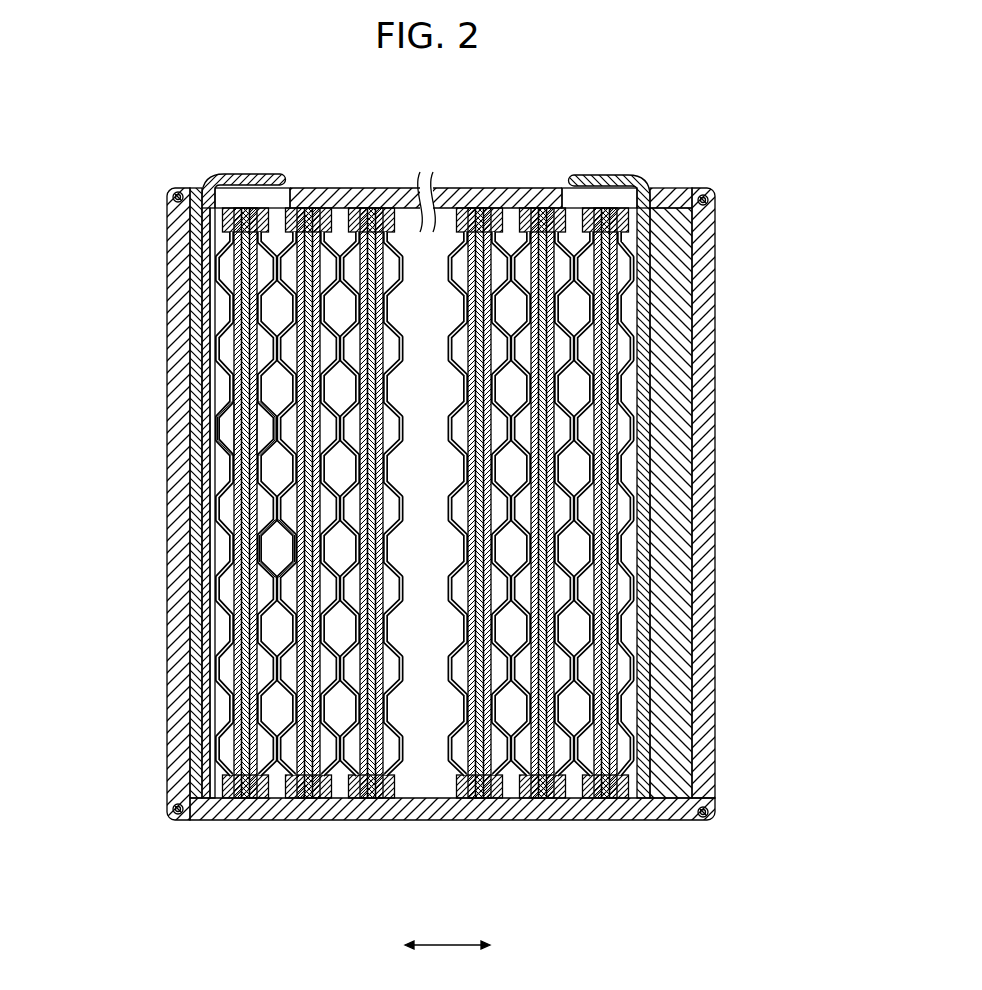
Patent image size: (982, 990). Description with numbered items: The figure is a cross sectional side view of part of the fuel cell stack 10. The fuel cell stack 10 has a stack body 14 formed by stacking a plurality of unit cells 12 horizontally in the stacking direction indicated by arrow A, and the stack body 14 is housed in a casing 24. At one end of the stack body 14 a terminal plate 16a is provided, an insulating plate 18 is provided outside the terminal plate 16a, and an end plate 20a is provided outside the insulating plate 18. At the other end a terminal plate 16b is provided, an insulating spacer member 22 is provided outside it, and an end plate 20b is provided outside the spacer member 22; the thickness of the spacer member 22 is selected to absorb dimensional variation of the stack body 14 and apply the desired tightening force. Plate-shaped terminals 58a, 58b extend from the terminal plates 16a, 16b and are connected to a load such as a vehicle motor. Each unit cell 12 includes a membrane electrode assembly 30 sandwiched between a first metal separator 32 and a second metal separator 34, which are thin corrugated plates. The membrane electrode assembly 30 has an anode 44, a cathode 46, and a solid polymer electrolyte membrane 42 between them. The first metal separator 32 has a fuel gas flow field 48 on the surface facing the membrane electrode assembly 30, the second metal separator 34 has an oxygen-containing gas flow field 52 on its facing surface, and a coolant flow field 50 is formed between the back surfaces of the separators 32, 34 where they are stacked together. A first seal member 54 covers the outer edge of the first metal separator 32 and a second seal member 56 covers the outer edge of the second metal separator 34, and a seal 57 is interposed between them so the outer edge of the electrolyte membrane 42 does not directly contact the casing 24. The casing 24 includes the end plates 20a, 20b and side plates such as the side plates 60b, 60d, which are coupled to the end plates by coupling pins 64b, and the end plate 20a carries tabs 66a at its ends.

The fuel cell stack 10 is at (60, 95).
The unit cell 12 is at (248, 803).
The stack body 14 is at (570, 903).
The terminal plate 16a is at (210, 297).
The terminal plate 16b is at (645, 273).
The insulating plate 18 is at (196, 314).
The end plate 20a is at (165, 257).
The end plate 20b is at (717, 250).
The insulating spacer member 22 is at (667, 202).
The casing 24 is at (352, 186).
The membrane electrode assembly 30 is at (425, 852).
The first metal separator 32 is at (515, 803).
The second metal separator 34 is at (549, 803).
The solid polymer electrolyte membrane 42 is at (375, 798).
The anode 44 is at (361, 798).
The cathode 46 is at (389, 798).
The fuel gas flow field 48 is at (230, 430).
The coolant flow field 50 is at (282, 543).
The oxygen-containing gas flow field 52 is at (268, 423).
The first seal member 54 is at (347, 228).
The second seal member 56 is at (391, 212).
The seal 57 is at (302, 212).
The terminal 58a is at (278, 174).
The terminal 58b is at (575, 176).
The side plate 60b is at (543, 188).
The side plate 60d is at (282, 820).
The coupling pin 64b is at (179, 192).
The tab 66a is at (171, 198).